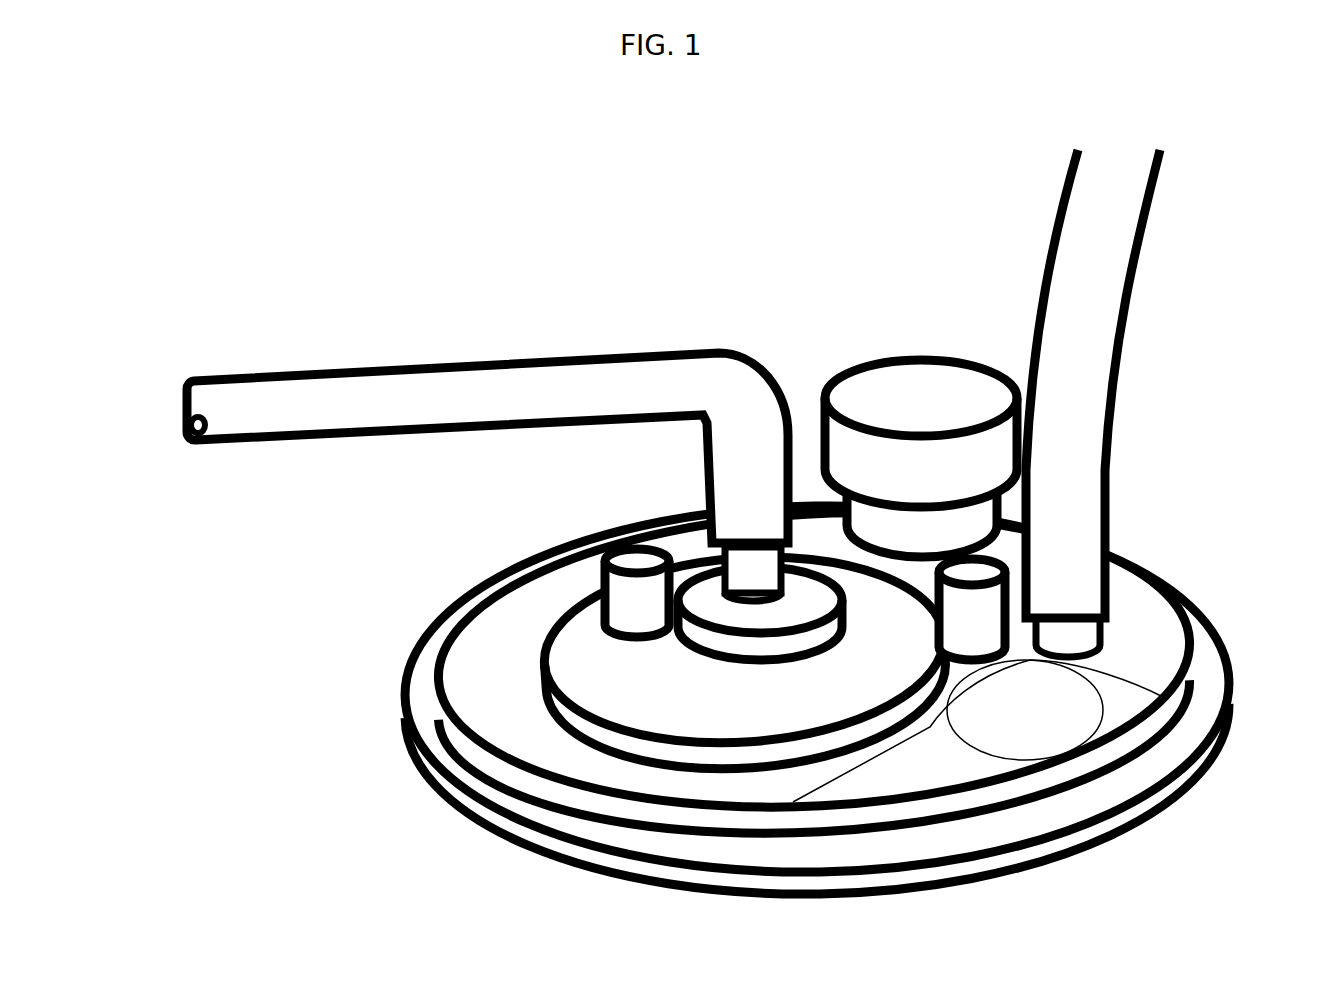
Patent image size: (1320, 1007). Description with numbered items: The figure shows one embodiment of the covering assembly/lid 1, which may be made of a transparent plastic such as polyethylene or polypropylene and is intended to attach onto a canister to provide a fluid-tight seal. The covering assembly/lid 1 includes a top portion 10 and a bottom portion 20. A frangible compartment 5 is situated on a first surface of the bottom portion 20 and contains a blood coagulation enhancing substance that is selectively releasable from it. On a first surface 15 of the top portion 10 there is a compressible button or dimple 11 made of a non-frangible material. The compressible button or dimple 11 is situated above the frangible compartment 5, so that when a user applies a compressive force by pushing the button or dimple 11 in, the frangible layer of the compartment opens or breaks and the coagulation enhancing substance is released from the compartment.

The covering assembly/lid 1 is at (540, 302).
The frangible compartment 5 is at (982, 767).
The top portion 10 is at (518, 628).
The compressible button or dimple 11 is at (1103, 712).
The first surface of the top portion 15 is at (1122, 672).
The bottom portion 20 is at (908, 899).